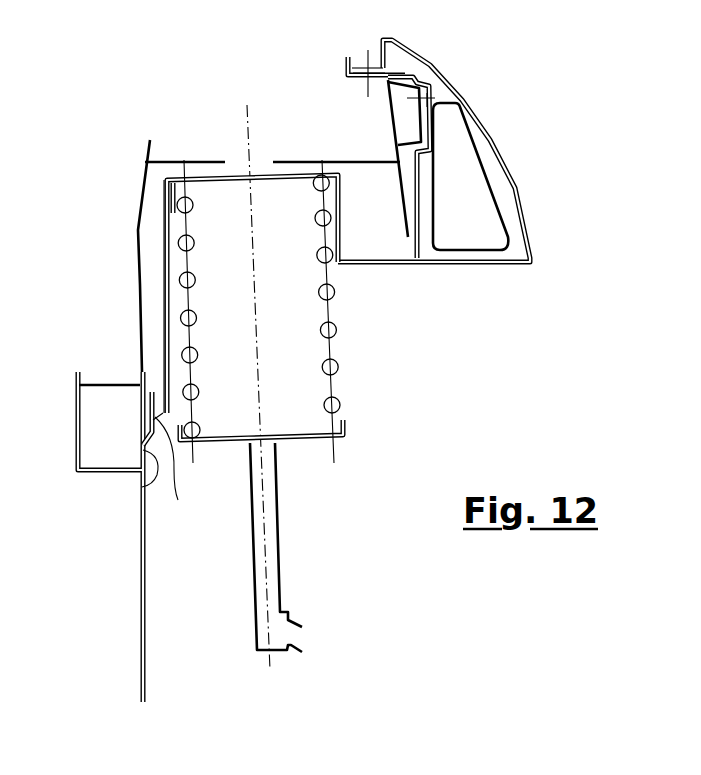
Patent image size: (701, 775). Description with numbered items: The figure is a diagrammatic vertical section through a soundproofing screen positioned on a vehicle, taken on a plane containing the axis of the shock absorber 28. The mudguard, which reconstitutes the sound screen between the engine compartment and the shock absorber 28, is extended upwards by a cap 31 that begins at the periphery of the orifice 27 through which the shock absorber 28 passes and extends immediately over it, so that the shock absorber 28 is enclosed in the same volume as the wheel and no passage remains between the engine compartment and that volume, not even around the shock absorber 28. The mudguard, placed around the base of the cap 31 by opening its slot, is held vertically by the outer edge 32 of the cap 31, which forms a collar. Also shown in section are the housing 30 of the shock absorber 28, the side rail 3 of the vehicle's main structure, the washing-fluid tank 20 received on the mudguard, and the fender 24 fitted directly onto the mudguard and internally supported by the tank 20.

The side rail 3 is at (92, 428).
The tank 20 is at (467, 197).
The fender 24 is at (442, 74).
The orifice 27 is at (147, 480).
The shock absorber 28 is at (288, 323).
The housing 30 is at (136, 228).
The cap 31 is at (163, 273).
The outer edge 32 is at (153, 447).